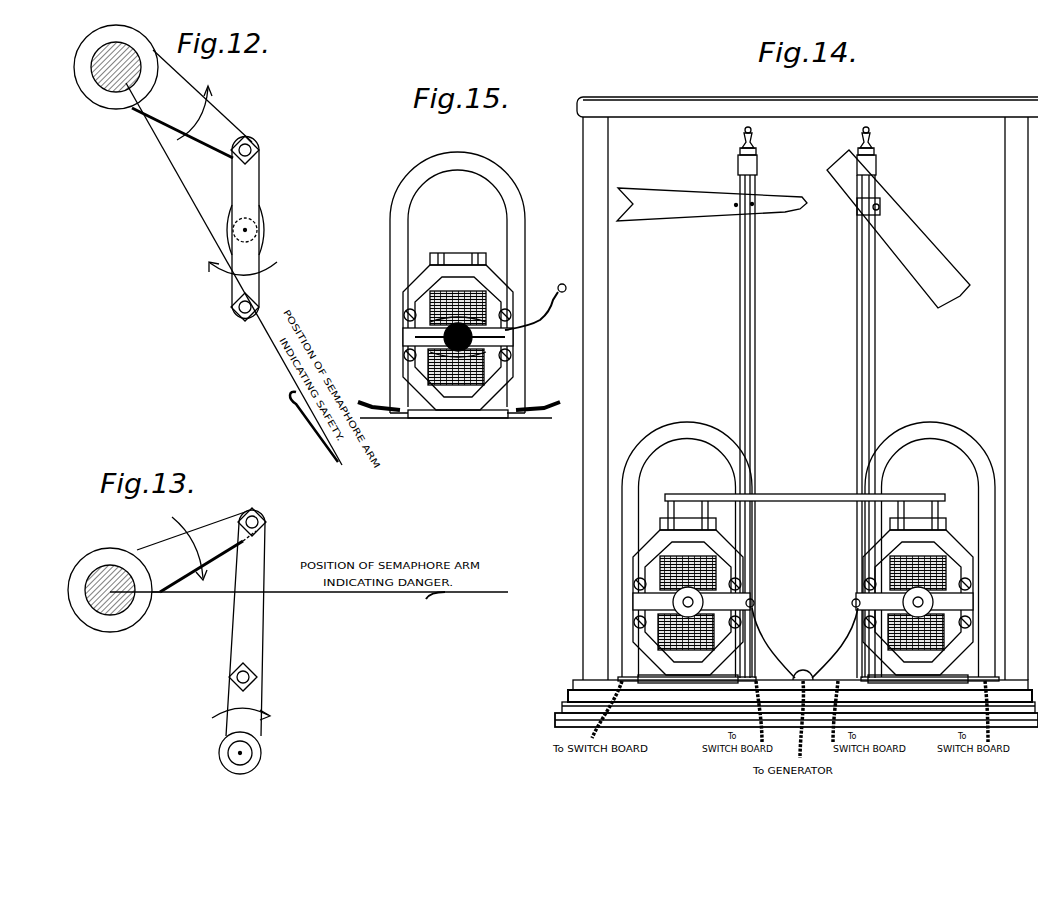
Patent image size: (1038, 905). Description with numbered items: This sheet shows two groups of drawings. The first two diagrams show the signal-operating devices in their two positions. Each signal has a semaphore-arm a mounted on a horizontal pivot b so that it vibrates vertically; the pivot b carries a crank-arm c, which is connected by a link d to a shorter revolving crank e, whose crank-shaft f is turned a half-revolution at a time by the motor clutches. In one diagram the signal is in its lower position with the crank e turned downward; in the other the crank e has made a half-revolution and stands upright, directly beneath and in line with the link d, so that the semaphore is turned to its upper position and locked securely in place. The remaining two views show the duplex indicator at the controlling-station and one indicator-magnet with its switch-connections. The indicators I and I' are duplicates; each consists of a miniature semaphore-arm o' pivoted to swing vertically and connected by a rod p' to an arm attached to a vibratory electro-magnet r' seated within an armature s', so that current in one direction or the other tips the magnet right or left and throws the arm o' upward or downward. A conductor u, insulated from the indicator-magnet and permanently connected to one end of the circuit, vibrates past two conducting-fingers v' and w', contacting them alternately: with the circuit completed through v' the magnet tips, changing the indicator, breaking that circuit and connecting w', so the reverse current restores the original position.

In FIG. 12, the semaphore-arm a is at (283, 356).
In FIG. 13, the semaphore-arm a is at (309, 591).
In FIG. 12, the horizontal pivot b is at (116, 67).
In FIG. 13, the horizontal pivot b is at (110, 590).
In FIG. 12, the crank-arm c is at (192, 104).
In FIG. 13, the crank-arm c is at (196, 552).
In FIG. 12, the link d is at (245, 228).
In FIG. 13, the link d is at (246, 622).
In FIG. 12, the revolving crank e is at (262, 241).
In FIG. 13, the revolving crank e is at (241, 741).
In FIG. 12, the crank-shaft f is at (252, 222).
In FIG. 13, the crank-shaft f is at (238, 755).
In FIG. 15, the indicator I is at (441, 282).
In FIG. 14, the indicator I is at (930, 551).
In FIG. 14, the indicator I' is at (687, 551).
In FIG. 15, the conductor u is at (433, 310).
In FIG. 15, the conducting-finger w' is at (430, 334).
In FIG. 15, the conducting-finger v' is at (535, 314).
In FIG. 15, the vibratory electro-magnet r' is at (457, 319).
In FIG. 14, the vibratory electro-magnet r' is at (802, 585).
In FIG. 15, the armature s' is at (456, 335).
In FIG. 14, the armature s' is at (802, 600).
In FIG. 14, the miniature semaphore-arm o' is at (793, 229).
In FIG. 14, the rod p' is at (807, 402).